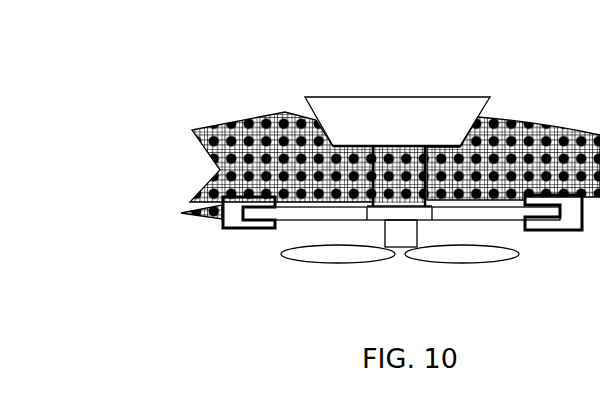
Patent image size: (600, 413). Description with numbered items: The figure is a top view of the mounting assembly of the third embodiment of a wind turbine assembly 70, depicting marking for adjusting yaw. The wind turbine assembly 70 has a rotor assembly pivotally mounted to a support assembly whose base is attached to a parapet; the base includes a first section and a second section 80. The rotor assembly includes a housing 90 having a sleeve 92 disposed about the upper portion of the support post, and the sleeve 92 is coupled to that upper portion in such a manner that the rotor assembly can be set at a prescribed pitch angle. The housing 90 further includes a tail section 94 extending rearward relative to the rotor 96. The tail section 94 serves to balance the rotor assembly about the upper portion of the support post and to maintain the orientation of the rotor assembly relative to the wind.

The wind turbine assembly 70 is at (344, 169).
The second section 80 is at (488, 213).
The tail section 94 is at (458, 113).
The sleeve 92 is at (418, 210).
The housing 90 is at (387, 232).
The rotor 96 is at (478, 262).